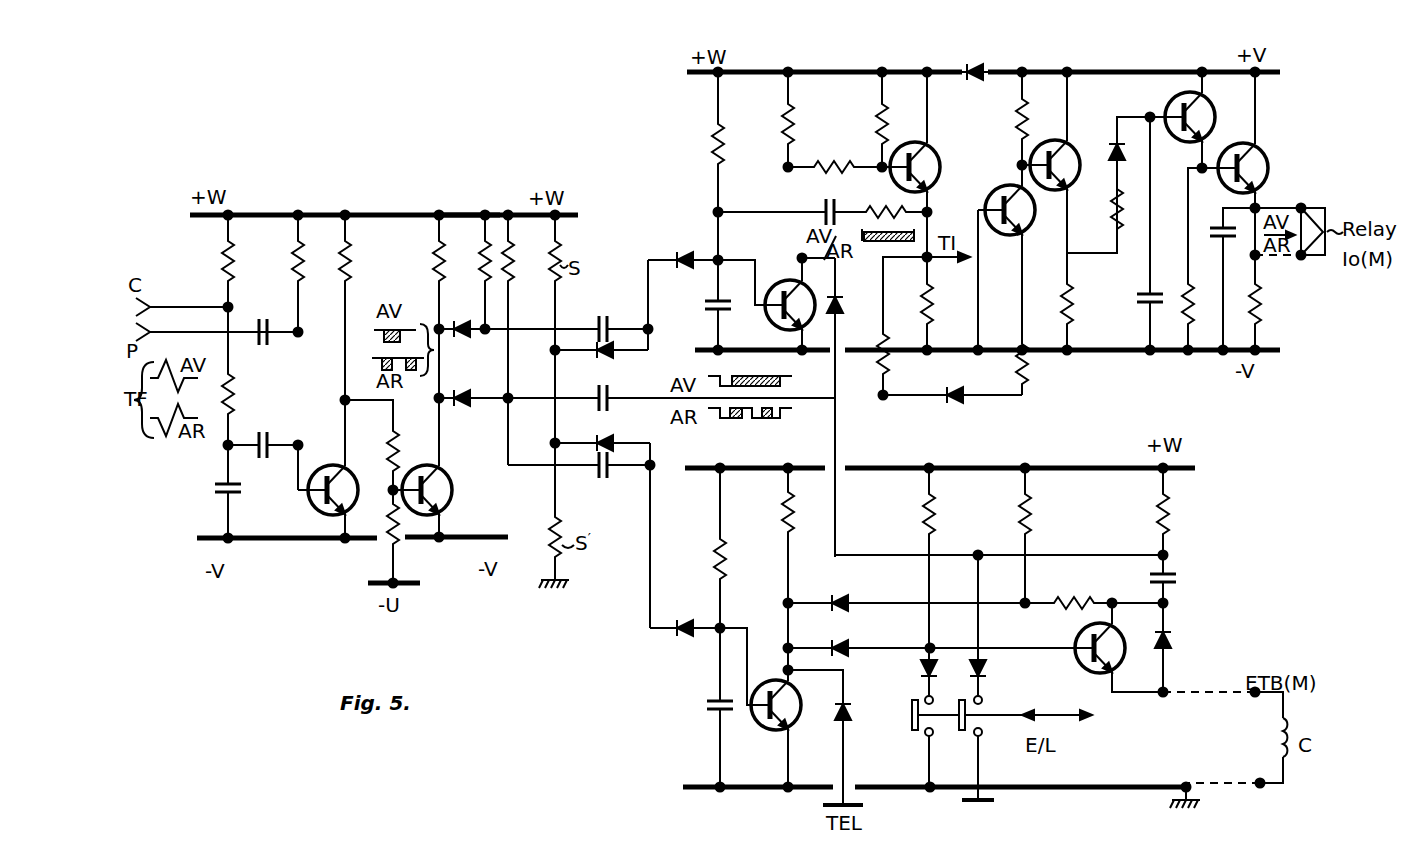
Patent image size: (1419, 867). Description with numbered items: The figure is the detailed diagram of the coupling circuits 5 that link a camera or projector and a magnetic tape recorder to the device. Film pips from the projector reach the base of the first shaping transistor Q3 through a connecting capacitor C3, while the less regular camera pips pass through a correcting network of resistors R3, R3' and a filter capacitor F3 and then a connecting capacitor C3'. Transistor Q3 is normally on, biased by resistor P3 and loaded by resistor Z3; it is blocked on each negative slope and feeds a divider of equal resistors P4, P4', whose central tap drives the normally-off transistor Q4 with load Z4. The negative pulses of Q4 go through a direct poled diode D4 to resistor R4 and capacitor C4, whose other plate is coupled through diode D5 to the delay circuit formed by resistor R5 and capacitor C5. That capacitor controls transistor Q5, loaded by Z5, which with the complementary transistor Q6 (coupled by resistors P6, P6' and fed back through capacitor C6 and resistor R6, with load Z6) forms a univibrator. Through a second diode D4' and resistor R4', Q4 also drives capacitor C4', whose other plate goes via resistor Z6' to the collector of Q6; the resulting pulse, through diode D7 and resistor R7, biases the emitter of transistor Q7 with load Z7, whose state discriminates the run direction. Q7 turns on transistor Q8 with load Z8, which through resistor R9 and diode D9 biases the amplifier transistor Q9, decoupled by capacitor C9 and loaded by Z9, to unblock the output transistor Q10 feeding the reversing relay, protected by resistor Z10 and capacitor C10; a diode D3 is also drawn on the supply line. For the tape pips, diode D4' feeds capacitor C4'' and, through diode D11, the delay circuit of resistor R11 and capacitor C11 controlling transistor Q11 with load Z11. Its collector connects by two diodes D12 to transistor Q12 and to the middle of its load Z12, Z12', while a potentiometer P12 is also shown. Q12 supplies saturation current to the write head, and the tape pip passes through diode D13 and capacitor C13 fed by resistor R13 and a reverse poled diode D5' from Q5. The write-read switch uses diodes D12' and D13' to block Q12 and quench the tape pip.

The coupling circuits 5 is at (460, 162).
The resistor R3 is at (210, 261).
The biasing resistor P3 is at (294, 274).
The load resistor Z3 is at (347, 262).
The connecting capacitor C3 is at (263, 314).
The resistor R3' is at (246, 376).
The connecting capacitor C3' is at (266, 466).
The filter capacitor F3 is at (214, 490).
The transistor Q3 is at (316, 511).
The resistor P4 is at (372, 448).
The resistor P4' is at (373, 541).
The transistor Q4 is at (452, 496).
The load resistor Z4 is at (434, 262).
The resistor R4 is at (467, 254).
The resistor R4' is at (524, 340).
The direct poled diode D4 is at (462, 351).
The direct poled diode D4' is at (474, 419).
The capacitor C4 is at (569, 315).
The capacitor C4' is at (671, 395).
The capacitor C4'' is at (581, 486).
The diode D3 is at (986, 82).
The resistor R5 is at (712, 154).
The diode D5 is at (685, 249).
The capacitor C5 is at (704, 298).
The transistor Q5 is at (766, 320).
The reverse poled diode D5' is at (838, 407).
The load resistance Z5 is at (782, 108).
The resistor P6 is at (865, 122).
The resistor P6' is at (839, 159).
The complementary transistor Q6 is at (985, 183).
The capacitor C6 is at (830, 206).
The resistor R6 is at (885, 201).
The load resistor Z6 is at (941, 315).
The resistor Z6' is at (902, 328).
The diode D7 is at (956, 370).
The resistor R7 is at (1030, 374).
The load resistor Z7 is at (1014, 120).
The transistor Q7 is at (990, 226).
The complementary transistor Q8 is at (1102, 145).
The collector load Z8 is at (1078, 315).
The diode D9 is at (1128, 158).
The resistor R9 is at (1122, 236).
The capacitor C9 is at (1136, 304).
The amplifier transistor Q9 is at (1244, 128).
The collector load Z9 is at (1184, 284).
The output transistor Q10 is at (1318, 153).
The capacitor C10 is at (1200, 238).
The resistor Z10 is at (1262, 318).
The resistor R11 is at (714, 546).
The diode D11 is at (686, 622).
The load resistor Z11 is at (786, 498).
The transistor Q11 is at (786, 757).
The capacitor C11 is at (706, 722).
The diodes D12 is at (931, 625).
The potentiometer P12 is at (934, 510).
The collector load Z12 is at (1010, 538).
The collector load Z12' is at (1094, 587).
The diode D12' is at (910, 720).
The diode D13' is at (999, 691).
The transistor Q12 is at (1084, 670).
The resistor R13 is at (1170, 504).
The capacitor C13 is at (1178, 582).
The diode D13 is at (1191, 661).